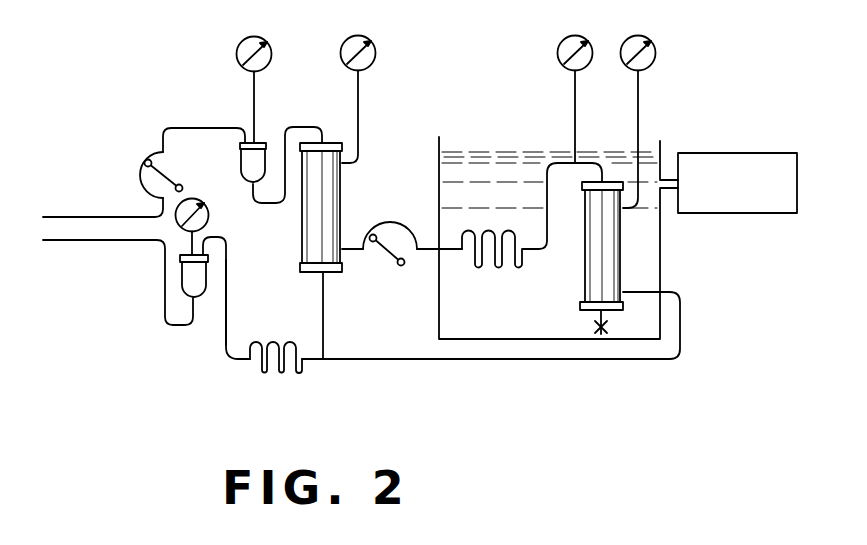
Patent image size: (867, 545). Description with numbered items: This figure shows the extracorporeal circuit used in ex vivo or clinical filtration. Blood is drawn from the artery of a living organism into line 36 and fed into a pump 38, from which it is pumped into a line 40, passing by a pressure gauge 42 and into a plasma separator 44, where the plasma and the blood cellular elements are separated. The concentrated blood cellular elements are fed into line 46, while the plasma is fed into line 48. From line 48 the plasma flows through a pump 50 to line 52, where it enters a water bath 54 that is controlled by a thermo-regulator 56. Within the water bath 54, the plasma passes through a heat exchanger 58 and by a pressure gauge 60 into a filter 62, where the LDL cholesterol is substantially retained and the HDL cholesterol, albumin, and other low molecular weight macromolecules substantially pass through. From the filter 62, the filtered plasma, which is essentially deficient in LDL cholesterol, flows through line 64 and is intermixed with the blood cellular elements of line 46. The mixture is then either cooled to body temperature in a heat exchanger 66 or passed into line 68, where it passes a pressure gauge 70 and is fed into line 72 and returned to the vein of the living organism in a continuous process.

The line 36 is at (120, 217).
The pump 38 is at (145, 160).
The line 40 is at (203, 128).
The pressure gauge 42 is at (237, 48).
The plasma separator 44 is at (333, 143).
The line 46 is at (322, 302).
The line 48 is at (348, 256).
The pump 50 is at (373, 234).
The line 52 is at (425, 247).
The water bath 54 is at (661, 243).
The thermo-regulator 56 is at (720, 153).
The heat exchanger 58 is at (493, 269).
The pressure gauge 60 is at (560, 50).
The filter 62 is at (582, 268).
The line 64 is at (683, 307).
The heat exchanger 66 is at (280, 374).
The line 68 is at (225, 345).
The pressure gauge 70 is at (180, 283).
The line 72 is at (123, 243).